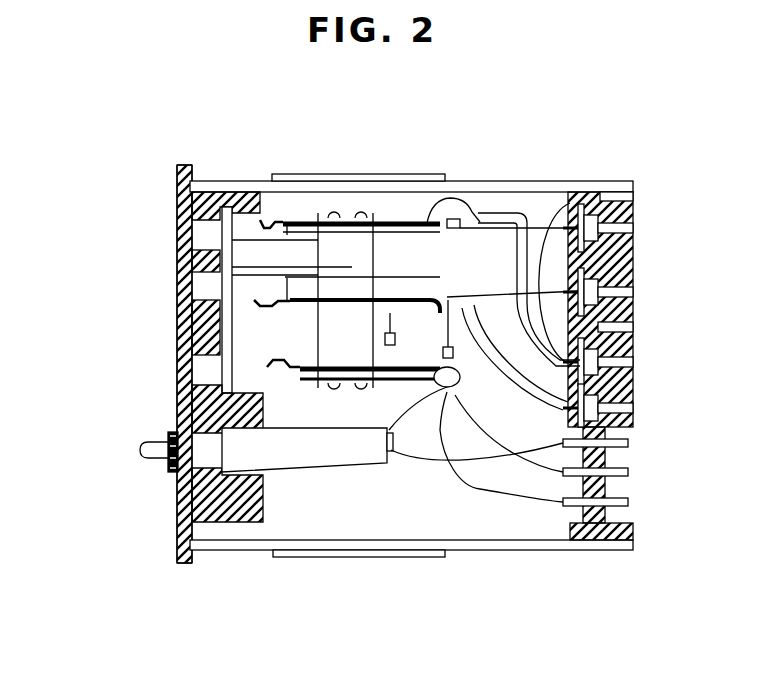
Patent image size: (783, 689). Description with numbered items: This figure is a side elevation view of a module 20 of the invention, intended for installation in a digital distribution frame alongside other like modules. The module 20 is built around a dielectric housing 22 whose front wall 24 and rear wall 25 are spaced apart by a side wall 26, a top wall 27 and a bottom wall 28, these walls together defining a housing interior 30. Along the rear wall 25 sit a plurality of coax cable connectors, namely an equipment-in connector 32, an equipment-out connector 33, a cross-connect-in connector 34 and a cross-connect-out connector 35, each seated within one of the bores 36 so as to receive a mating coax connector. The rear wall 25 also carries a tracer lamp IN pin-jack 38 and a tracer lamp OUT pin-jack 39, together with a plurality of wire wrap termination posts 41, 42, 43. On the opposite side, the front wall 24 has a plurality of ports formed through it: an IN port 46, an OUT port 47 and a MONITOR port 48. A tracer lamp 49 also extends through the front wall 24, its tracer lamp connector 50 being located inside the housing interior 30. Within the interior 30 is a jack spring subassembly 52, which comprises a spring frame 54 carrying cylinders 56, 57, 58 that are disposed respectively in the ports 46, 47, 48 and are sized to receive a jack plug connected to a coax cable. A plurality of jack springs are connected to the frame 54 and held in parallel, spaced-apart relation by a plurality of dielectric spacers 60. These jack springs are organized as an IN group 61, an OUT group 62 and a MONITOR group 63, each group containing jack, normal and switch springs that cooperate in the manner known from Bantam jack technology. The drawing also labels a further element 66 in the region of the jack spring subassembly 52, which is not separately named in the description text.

The module 20 is at (160, 146).
The dielectric housing 22 is at (187, 163).
The front wall 24 is at (178, 196).
The rear wall 25 is at (637, 181).
The side wall 26 is at (277, 529).
The top wall 27 is at (478, 181).
The bottom wall 28 is at (468, 551).
The housing interior 30 is at (392, 513).
The equipment-in connector 32 is at (620, 364).
The equipment-out connector 33 is at (623, 408).
The cross-connect-in connector 34 is at (617, 232).
The cross-connect-out connector 35 is at (617, 293).
The bores 36 is at (635, 227).
The tracer lamp IN pin-jack 38 is at (635, 197).
The tracer lamp OUT pin-jack 39 is at (603, 327).
The wire wrap termination post 41 is at (632, 443).
The wire wrap termination post 42 is at (632, 472).
The wire wrap termination post 43 is at (632, 502).
The IN port 46 is at (178, 230).
The OUT port 47 is at (178, 287).
The MONITOR port 48 is at (180, 363).
The tracer lamp 49 is at (147, 444).
The tracer lamp connector 50 is at (323, 455).
The jack spring subassembly 52 is at (337, 401).
The spring frame 54 is at (357, 266).
The cylinder 56 is at (197, 238).
The cylinder 57 is at (197, 293).
The cylinder 58 is at (193, 373).
The dielectric spacers 60 is at (362, 240).
The IN group 61 is at (303, 216).
The OUT group 62 is at (294, 316).
The MONITOR group 63 is at (276, 372).
The center contact 66 is at (360, 284).